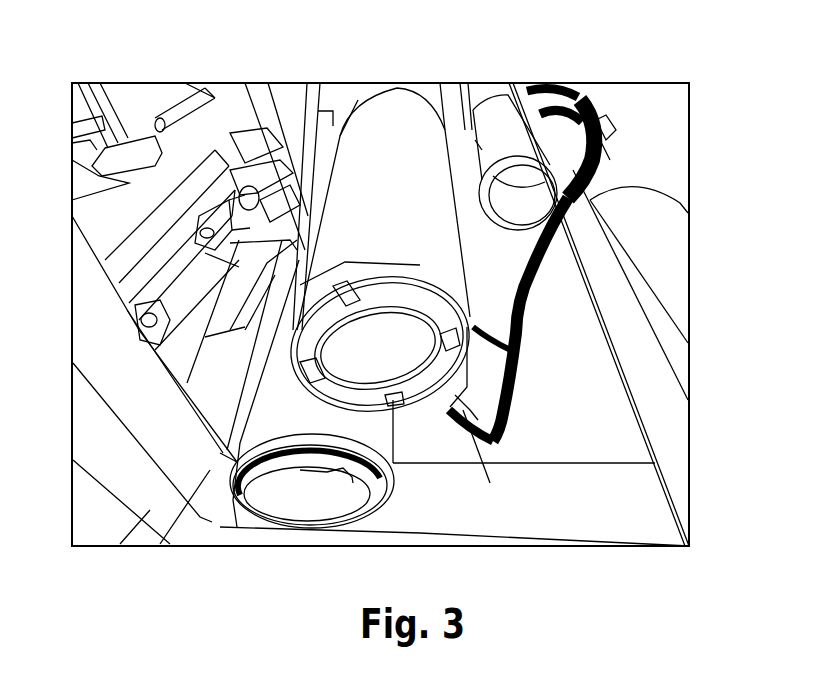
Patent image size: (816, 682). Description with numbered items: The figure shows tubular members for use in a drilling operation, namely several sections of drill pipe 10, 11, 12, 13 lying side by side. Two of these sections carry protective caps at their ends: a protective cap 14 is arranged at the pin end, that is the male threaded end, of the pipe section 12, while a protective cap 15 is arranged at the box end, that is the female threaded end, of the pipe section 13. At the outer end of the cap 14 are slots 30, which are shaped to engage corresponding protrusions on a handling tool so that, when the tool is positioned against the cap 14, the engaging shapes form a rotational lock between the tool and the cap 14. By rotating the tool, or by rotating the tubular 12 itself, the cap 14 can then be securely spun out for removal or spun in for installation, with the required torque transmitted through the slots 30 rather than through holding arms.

The drill pipe section 10 is at (665, 230).
The drill pipe section 11 is at (495, 115).
The drill pipe section 12 is at (400, 125).
The drill pipe section 13 is at (378, 443).
The protective cap 14 is at (480, 454).
The protective cap 15 is at (232, 520).
The slots 30 is at (440, 280).